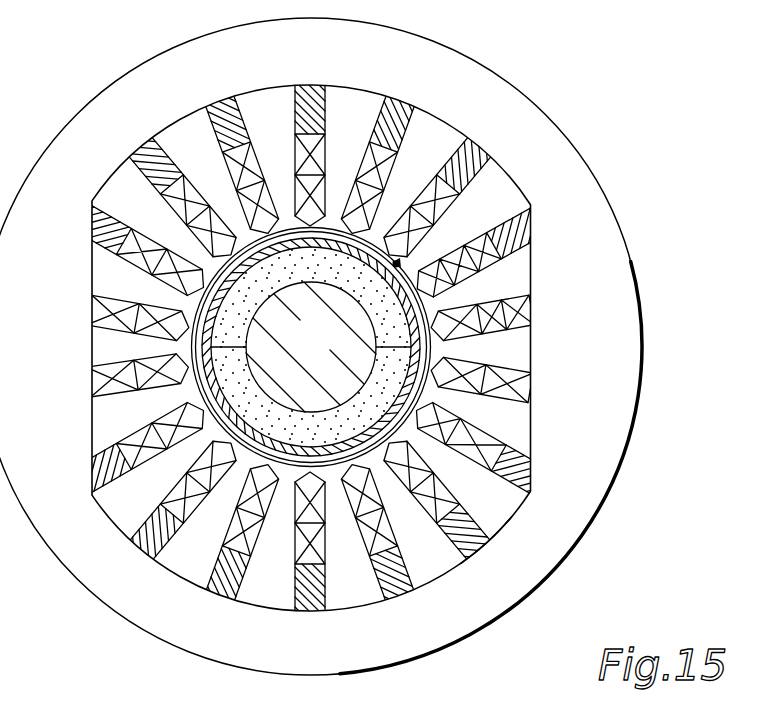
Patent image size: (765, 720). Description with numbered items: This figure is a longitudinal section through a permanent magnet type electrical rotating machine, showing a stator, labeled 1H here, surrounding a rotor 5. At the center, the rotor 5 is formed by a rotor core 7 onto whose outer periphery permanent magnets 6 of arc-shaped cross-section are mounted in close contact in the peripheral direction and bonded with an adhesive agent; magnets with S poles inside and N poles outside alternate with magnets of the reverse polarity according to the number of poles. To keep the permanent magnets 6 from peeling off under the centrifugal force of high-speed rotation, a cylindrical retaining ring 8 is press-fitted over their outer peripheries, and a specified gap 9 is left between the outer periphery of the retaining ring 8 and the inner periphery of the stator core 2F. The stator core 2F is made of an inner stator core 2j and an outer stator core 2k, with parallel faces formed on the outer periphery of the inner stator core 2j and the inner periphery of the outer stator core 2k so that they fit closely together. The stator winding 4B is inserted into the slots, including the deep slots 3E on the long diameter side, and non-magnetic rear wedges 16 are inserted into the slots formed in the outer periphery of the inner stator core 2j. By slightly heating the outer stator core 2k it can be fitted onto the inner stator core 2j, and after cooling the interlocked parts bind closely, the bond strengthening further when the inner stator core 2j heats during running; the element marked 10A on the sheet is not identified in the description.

The stator core 1H is at (500, 107).
The stator core 2F is at (507, 582).
The inner stator core 2j is at (497, 506).
The outer stator core 2k is at (583, 498).
The deep slots 3E is at (324, 148).
The stator winding 4B is at (200, 187).
The rotor 5 is at (399, 262).
The permanent magnets 6 is at (252, 285).
The rotor core 7 is at (320, 361).
The retaining ring 8 is at (373, 248).
The gap 9 is at (422, 304).
The stator tooth 10A is at (352, 157).
The rear wedges 16 is at (308, 613).